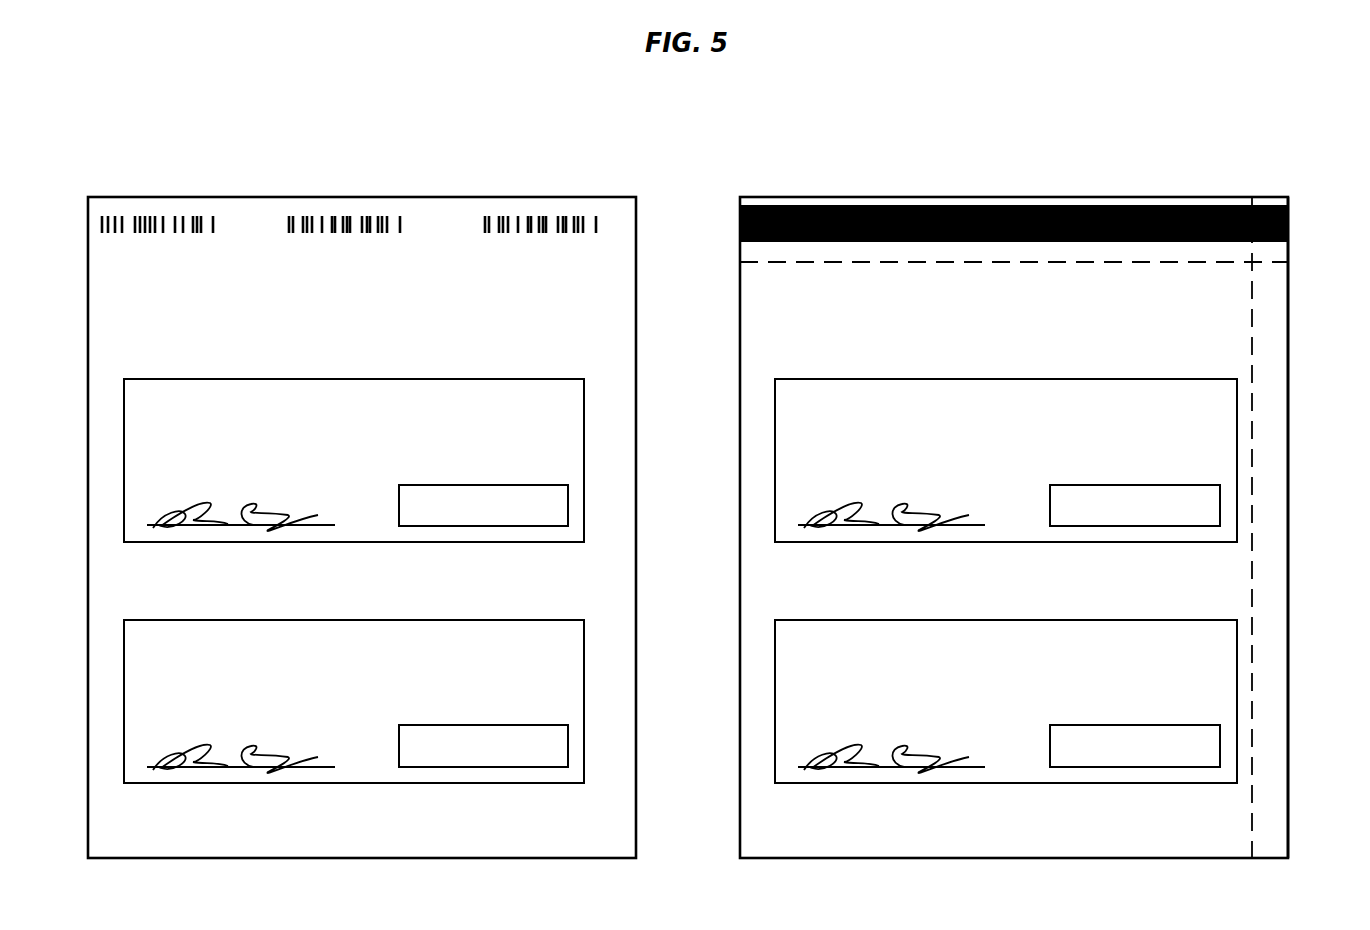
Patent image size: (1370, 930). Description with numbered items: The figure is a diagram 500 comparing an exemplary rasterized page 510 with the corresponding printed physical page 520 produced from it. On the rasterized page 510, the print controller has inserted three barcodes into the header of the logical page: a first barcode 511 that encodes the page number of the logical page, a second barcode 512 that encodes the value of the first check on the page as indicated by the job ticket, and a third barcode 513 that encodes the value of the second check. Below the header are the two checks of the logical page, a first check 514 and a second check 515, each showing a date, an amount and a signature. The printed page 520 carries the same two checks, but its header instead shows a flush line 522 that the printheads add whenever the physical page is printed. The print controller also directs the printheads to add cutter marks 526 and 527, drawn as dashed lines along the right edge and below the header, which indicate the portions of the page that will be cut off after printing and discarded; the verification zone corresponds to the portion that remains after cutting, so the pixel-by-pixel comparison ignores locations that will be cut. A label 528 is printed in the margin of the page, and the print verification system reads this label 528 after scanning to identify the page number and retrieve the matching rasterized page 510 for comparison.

The rasterized and printed page comparison 500 is at (276, 104).
The rasterized page 510 is at (355, 858).
The first barcode 511 is at (175, 235).
The second barcode 512 is at (338, 235).
The third barcode 513 is at (527, 235).
The first check image 514 is at (354, 469).
The second check image 515 is at (440, 783).
The printed page 520 is at (883, 858).
The printed header band 522 is at (1125, 206).
The cutter mark 526 is at (1250, 830).
The cutter mark 527 is at (1263, 264).
The label 528 is at (1289, 628).